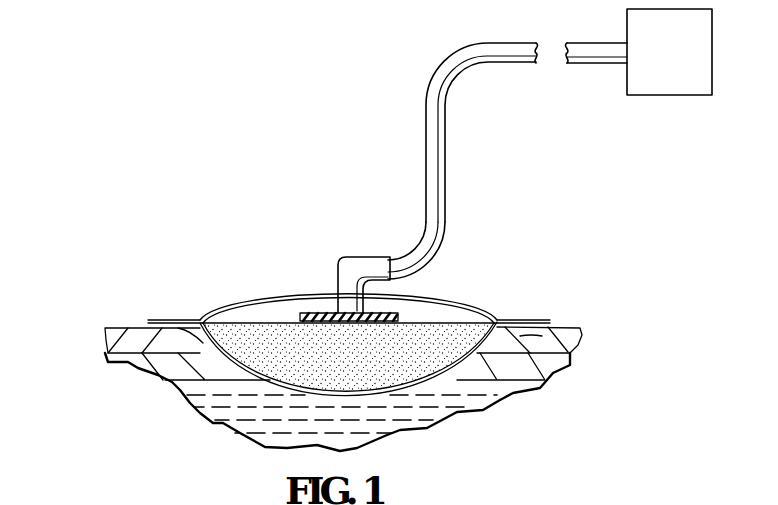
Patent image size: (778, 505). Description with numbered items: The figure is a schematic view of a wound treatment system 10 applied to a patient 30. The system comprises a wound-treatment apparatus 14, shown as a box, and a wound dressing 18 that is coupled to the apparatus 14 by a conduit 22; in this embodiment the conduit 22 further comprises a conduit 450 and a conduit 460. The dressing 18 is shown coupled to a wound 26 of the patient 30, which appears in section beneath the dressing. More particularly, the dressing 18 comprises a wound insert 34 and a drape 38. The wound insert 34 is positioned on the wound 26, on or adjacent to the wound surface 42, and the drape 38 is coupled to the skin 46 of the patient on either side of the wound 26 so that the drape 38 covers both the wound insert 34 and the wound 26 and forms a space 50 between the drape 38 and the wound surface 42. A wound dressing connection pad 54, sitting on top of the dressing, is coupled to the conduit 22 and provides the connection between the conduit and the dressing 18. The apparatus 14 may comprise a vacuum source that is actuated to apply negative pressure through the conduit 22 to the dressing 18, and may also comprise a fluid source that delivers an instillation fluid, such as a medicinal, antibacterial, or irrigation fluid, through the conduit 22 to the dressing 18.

The wound treatment system 10 is at (238, 74).
The wound-treatment apparatus 14 is at (682, 65).
The wound dressing 18 is at (290, 256).
The conduit 22 is at (450, 161).
The conduit 450 is at (450, 161).
The conduit 460 is at (426, 162).
The wound 26 is at (169, 403).
The patient 30 is at (112, 323).
The wound insert 34 is at (365, 366).
The drape 38 is at (485, 309).
The wound surface 42 is at (198, 322).
The skin 46 is at (140, 325).
The space 50 is at (246, 300).
The wound dressing connection pad 54 is at (368, 255).